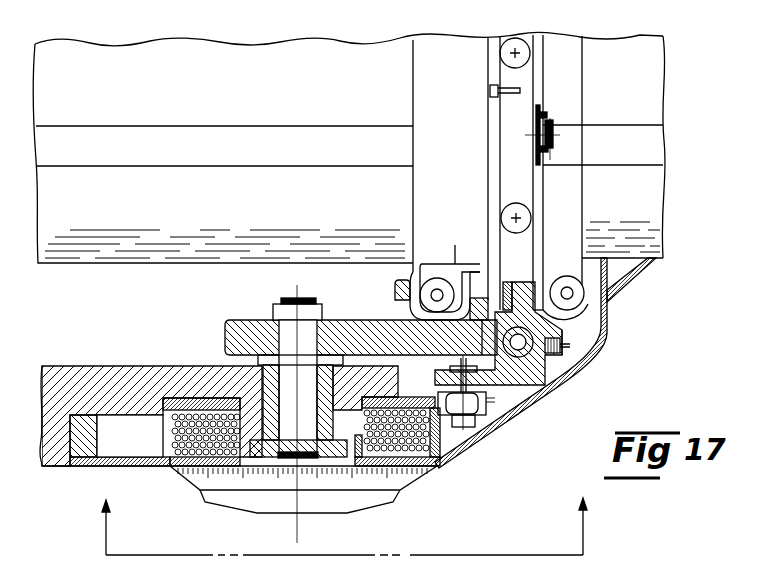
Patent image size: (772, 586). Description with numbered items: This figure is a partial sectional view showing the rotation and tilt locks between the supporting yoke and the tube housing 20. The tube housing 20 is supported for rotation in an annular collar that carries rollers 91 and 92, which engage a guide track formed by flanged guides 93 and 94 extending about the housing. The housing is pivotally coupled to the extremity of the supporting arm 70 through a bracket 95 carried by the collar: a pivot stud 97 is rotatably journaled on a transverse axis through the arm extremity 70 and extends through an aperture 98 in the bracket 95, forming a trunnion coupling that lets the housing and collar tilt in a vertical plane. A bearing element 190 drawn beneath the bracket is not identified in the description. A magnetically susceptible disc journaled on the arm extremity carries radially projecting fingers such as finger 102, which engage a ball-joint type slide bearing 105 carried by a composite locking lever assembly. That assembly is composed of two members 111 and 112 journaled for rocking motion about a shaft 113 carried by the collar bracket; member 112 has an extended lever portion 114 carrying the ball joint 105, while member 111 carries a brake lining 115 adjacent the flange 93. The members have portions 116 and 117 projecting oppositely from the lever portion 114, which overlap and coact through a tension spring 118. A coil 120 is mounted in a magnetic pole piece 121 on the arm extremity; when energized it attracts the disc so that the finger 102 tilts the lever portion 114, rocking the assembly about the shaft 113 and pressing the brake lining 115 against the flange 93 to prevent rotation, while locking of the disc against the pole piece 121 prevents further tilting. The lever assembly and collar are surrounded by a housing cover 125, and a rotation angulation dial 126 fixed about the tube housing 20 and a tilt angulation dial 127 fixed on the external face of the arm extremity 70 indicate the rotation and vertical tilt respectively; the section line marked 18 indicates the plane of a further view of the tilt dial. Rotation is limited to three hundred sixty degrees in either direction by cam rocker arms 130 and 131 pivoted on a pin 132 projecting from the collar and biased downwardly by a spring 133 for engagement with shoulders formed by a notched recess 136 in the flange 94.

The tube housing 20 is at (349, 176).
The roller 92 is at (515, 38).
The flanged guide 93 is at (488, 70).
The flanged guide 94 is at (541, 70).
The roller 91 is at (490, 94).
The cam rocker arm 131 is at (547, 116).
The pin 132 is at (553, 132).
The spring 133 is at (549, 150).
The cam rocker arm 130 is at (543, 163).
The notched recess 136 is at (536, 148).
The bracket 95 is at (238, 322).
The aperture 98 is at (323, 310).
The pivot stud 97 is at (262, 360).
The supporting arm 70 is at (55, 470).
The bearing race 190 is at (404, 404).
The shaft 113 is at (522, 338).
The extended lever portion 114 is at (509, 345).
The brake lining 115 is at (508, 282).
The locking lever member 112 is at (537, 300).
The projecting portion 117 is at (560, 341).
The tension spring 118 is at (570, 347).
The projecting portion 116 is at (562, 358).
The finger 102 is at (493, 400).
The housing cover 125 is at (533, 407).
The ball-joint slide bearing 105 is at (487, 434).
The locking lever member 111 is at (560, 385).
The rotation angulation dial 126 is at (636, 290).
The coil 120 is at (436, 463).
The magnetic pole piece 121 is at (437, 467).
The tilt angulation dial 127 is at (402, 492).
The section line 18- 18 is at (341, 517).